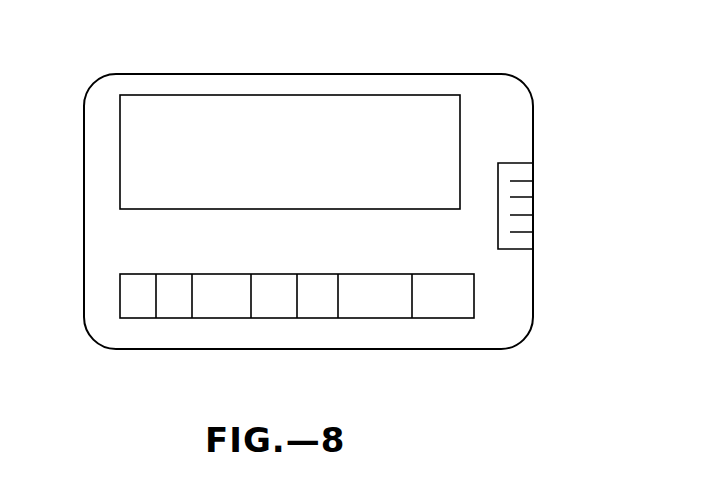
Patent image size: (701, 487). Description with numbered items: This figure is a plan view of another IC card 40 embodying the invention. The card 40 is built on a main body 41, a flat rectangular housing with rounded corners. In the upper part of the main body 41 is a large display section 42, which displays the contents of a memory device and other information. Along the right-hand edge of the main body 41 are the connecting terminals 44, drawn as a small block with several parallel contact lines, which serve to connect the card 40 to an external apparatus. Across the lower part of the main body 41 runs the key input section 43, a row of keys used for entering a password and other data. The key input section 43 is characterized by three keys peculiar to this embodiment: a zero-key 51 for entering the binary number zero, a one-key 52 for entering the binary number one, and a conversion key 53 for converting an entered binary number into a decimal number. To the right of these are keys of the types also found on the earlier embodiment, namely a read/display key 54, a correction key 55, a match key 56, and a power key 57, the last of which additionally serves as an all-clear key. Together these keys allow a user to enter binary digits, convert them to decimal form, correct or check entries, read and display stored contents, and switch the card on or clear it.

The IC card 40 is at (410, 50).
The main body 41 is at (533, 125).
The display section 42 is at (462, 98).
The key input section 43 is at (475, 296).
The connecting terminals 44 is at (523, 191).
The "0"-key 51 is at (143, 318).
The "1"-key 52 is at (175, 318).
The conversion key 53 is at (220, 318).
The read/display key 54 is at (273, 318).
The correction key 55 is at (320, 318).
The match key 56 is at (373, 318).
The power key 57 is at (440, 318).